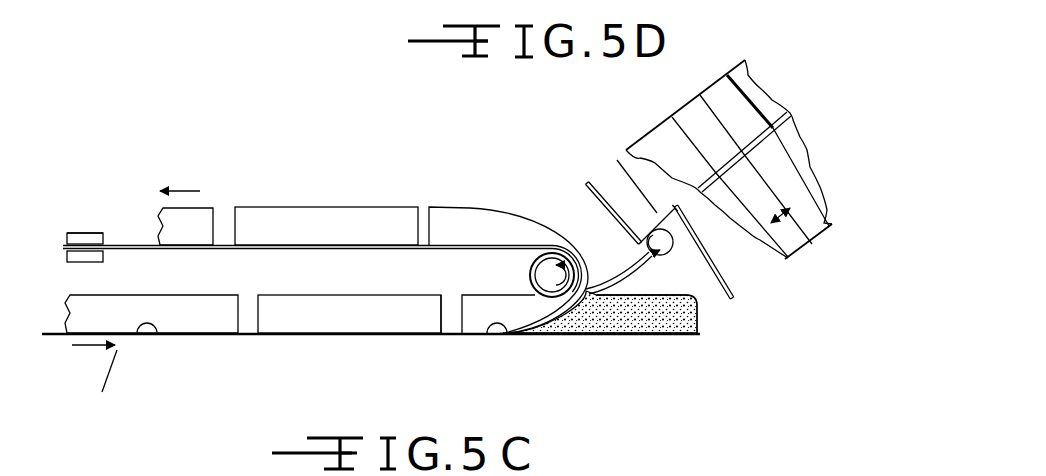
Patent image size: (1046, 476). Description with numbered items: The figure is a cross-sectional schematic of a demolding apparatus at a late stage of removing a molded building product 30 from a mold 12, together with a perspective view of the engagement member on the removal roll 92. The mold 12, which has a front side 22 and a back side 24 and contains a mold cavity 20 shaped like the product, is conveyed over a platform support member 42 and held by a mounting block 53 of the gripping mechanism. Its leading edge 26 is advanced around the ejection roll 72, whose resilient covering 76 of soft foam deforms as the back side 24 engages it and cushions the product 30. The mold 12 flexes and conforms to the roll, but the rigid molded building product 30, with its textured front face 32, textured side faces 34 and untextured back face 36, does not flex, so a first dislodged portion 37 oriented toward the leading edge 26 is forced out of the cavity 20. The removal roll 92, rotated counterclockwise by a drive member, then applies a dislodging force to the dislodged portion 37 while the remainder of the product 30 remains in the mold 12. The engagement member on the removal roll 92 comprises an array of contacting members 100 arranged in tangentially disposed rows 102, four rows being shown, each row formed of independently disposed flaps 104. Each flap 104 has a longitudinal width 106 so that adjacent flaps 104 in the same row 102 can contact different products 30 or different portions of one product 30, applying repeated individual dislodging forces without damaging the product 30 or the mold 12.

In FIG. 5C, the mold 12 is at (173, 291).
In FIG. 5C, the mold cavity 20 is at (149, 323).
In FIG. 5C, the front side 22 is at (443, 338).
In FIG. 5C, the back side 24 is at (350, 294).
In FIG. 5C, the leading edge 26 is at (65, 243).
In FIG. 5C, the molded building product 30 is at (661, 336).
In FIG. 5C, the textured front face 32 is at (700, 297).
In FIG. 5C, the textured side faces 34 is at (636, 327).
In FIG. 5C, the untextured back face 36 is at (626, 336).
In FIG. 5C, the dislodged portion 37 is at (697, 313).
In FIG. 5C, the platform support member 42 is at (45, 333).
In FIG. 5C, the mounting block 53 is at (90, 238).
In FIG. 5C, the ejection roll 72 is at (530, 272).
In FIG. 5C, the resilient covering 76 is at (531, 256).
In FIG. 5C, the removal roll 92 is at (633, 251).
In FIG. 5D, the contacting members 100 is at (684, 102).
In FIG. 5D, the rows 102 is at (763, 88).
In FIG. 5C, the flaps 104 is at (583, 180).
In FIG. 5D, the flaps 104 is at (717, 95).
In FIG. 5D, the longitudinal width 106 is at (808, 244).